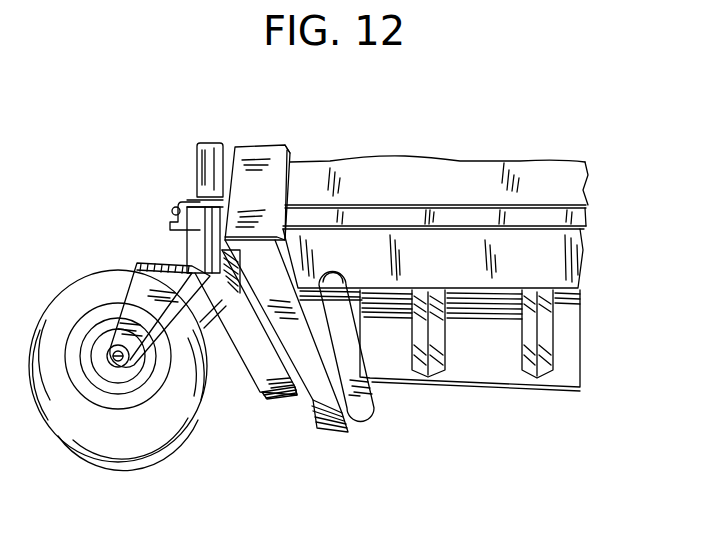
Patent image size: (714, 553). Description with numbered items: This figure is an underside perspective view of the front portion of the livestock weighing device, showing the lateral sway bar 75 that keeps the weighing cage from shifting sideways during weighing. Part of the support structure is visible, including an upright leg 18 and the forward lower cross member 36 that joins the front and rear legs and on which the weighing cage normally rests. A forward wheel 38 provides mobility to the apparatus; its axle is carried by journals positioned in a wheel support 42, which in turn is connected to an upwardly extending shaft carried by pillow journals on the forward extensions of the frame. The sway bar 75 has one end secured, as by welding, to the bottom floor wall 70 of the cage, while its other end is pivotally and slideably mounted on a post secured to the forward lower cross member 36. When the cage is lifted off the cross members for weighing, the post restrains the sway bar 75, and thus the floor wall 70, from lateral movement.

The upright leg 18 is at (260, 163).
The lower cross member 36 is at (312, 413).
The forward wheel 38 is at (78, 428).
The wheel support 42 is at (152, 277).
The bottom floor wall 70 is at (483, 363).
The lateral sway bar 75 is at (367, 408).